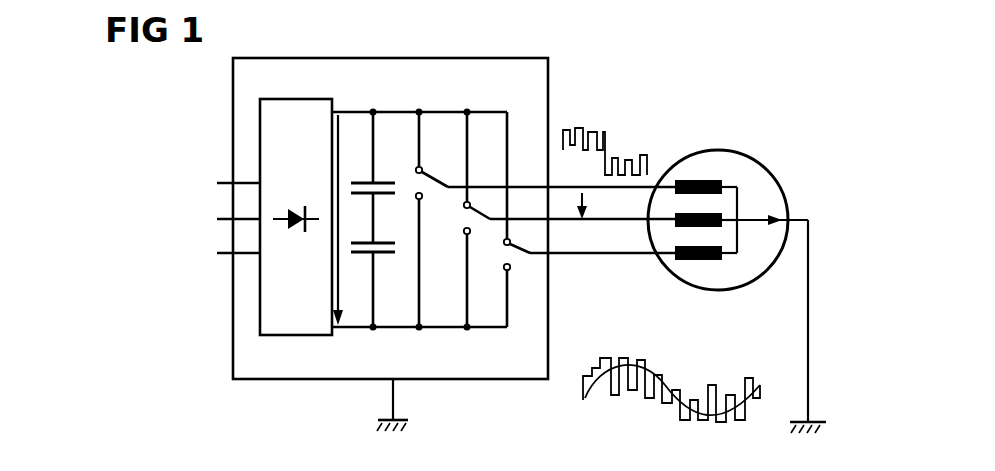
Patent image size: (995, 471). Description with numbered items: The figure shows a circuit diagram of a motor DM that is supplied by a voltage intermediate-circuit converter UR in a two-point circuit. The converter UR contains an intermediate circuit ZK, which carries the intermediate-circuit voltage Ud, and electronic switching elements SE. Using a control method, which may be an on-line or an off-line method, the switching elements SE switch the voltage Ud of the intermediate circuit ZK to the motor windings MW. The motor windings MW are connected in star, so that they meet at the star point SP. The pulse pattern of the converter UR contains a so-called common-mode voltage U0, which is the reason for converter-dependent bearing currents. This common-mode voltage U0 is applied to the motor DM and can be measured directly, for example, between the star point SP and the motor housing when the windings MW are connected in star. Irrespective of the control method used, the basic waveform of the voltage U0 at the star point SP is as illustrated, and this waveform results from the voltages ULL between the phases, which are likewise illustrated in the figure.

The voltage intermediate-circuit converter UR is at (550, 80).
The intermediate circuit ZK is at (380, 340).
The voltage of the intermediate circuit Ud is at (342, 157).
The electronic switching elements SE is at (473, 219).
The voltages between the phases ULL is at (582, 193).
The motor DM is at (768, 170).
The motor windings MW is at (700, 162).
The star point SP is at (743, 216).
The common-mode voltage U0 is at (757, 216).